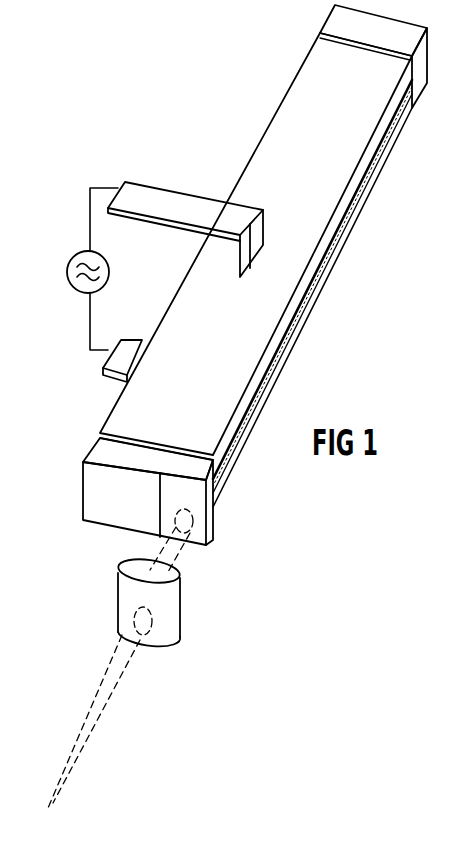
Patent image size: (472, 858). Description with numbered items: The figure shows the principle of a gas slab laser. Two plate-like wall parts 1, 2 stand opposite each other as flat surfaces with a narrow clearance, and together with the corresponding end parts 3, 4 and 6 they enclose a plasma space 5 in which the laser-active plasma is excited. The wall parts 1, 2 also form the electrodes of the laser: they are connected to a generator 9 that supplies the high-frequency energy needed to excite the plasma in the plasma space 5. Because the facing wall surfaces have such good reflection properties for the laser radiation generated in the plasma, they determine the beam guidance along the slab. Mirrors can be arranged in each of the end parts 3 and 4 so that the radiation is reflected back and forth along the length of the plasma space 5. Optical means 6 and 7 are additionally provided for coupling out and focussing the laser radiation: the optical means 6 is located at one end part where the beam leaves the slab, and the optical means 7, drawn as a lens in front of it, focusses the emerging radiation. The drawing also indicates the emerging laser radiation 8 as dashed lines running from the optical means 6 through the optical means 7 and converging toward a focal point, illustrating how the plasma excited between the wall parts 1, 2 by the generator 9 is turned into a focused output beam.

The wall part 1 is at (363, 200).
The wall part 2 is at (382, 135).
The end part 3 is at (427, 47).
The end part 4 is at (103, 507).
The plasma space 5 is at (328, 260).
The optical means 6 is at (212, 538).
The optical means 7 is at (162, 615).
The light beam focus 8 is at (42, 813).
The generator 9 is at (110, 275).